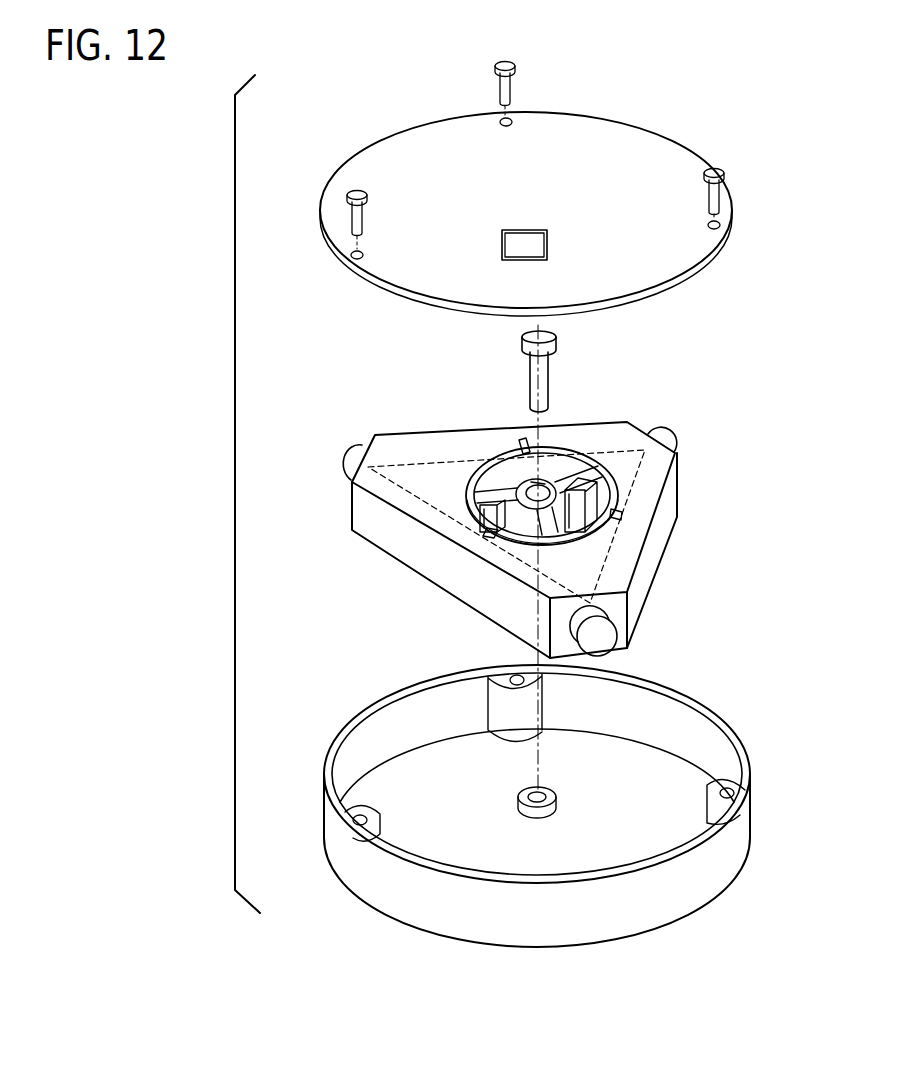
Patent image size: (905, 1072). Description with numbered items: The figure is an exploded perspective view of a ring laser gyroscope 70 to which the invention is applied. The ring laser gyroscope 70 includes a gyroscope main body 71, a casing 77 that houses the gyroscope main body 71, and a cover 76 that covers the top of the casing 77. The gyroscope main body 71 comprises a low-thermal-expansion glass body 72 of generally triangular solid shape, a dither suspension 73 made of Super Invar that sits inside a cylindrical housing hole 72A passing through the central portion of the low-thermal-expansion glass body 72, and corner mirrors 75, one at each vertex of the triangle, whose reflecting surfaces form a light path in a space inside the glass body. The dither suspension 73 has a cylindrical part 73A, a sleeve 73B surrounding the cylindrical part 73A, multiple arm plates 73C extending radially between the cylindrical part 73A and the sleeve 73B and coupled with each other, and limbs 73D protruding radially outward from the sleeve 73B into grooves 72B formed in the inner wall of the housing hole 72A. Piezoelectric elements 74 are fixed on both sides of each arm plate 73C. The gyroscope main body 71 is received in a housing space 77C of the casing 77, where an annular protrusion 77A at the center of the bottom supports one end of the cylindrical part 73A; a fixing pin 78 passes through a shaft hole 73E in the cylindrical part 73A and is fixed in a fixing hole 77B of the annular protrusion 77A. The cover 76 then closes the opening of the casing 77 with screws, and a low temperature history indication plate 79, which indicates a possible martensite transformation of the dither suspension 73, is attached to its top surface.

The ring laser gyroscope 70 is at (212, 450).
The gyroscope main body 71 is at (375, 562).
The low-thermal-expansion glass body 72 is at (652, 488).
The housing hole 72A is at (517, 540).
The grooves 72B is at (470, 520).
The dither suspension 73 is at (543, 509).
The cylindrical part 73A is at (493, 490).
The sleeve 73B is at (677, 453).
The arm plates 73C is at (517, 448).
The limbs 73D is at (623, 506).
The shaft hole 73E is at (528, 482).
The piezoelectric elements 74 is at (573, 513).
The corner mirrors 75 is at (345, 470).
The cover 76 is at (625, 147).
The casing 77 is at (546, 806).
The annular protrusion 77A is at (546, 796).
The fixing hole 77B is at (527, 793).
The housing space 77C is at (360, 762).
The fixing pin 78 is at (550, 372).
The low temperature history indication plate 79 is at (523, 230).